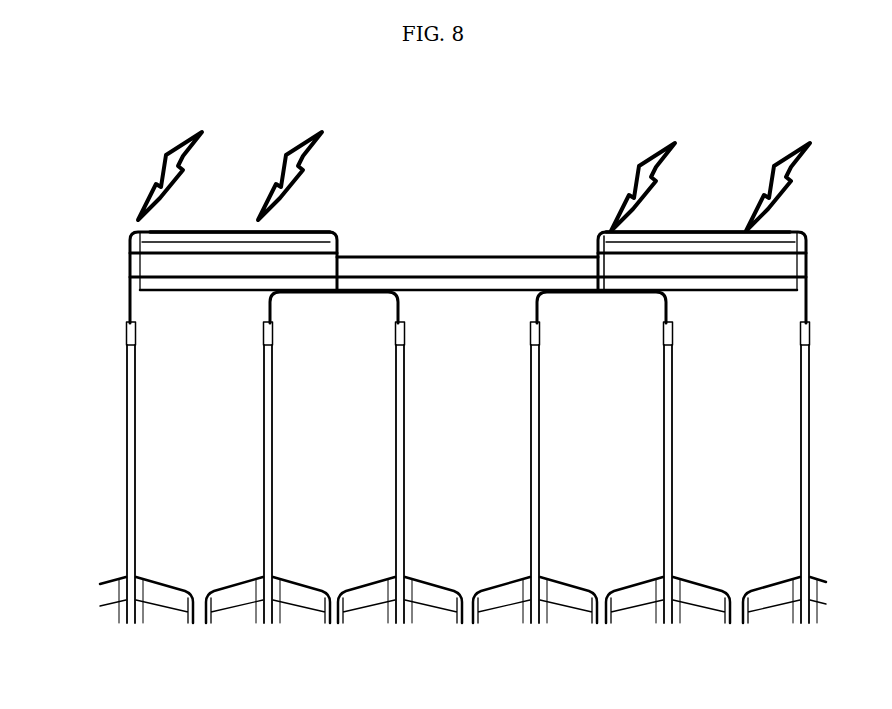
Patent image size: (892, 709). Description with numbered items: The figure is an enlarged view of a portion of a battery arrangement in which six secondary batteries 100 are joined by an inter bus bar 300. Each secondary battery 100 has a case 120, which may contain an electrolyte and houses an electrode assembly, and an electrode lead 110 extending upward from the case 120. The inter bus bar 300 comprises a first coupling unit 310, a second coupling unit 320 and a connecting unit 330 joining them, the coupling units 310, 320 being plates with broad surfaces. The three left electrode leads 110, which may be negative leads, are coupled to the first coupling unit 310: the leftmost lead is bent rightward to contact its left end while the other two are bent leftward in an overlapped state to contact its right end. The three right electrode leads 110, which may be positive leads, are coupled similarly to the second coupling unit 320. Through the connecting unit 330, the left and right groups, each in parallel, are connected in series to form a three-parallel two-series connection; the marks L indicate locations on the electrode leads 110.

The secondary battery 100 is at (96, 400).
The electrode lead 110 is at (195, 230).
The case 120 is at (162, 578).
The inter bus bar 300 is at (557, 117).
The first coupling unit 310 is at (337, 242).
The second coupling unit 320 is at (597, 238).
The connecting unit 330 is at (473, 270).
The light L is at (476, 168).